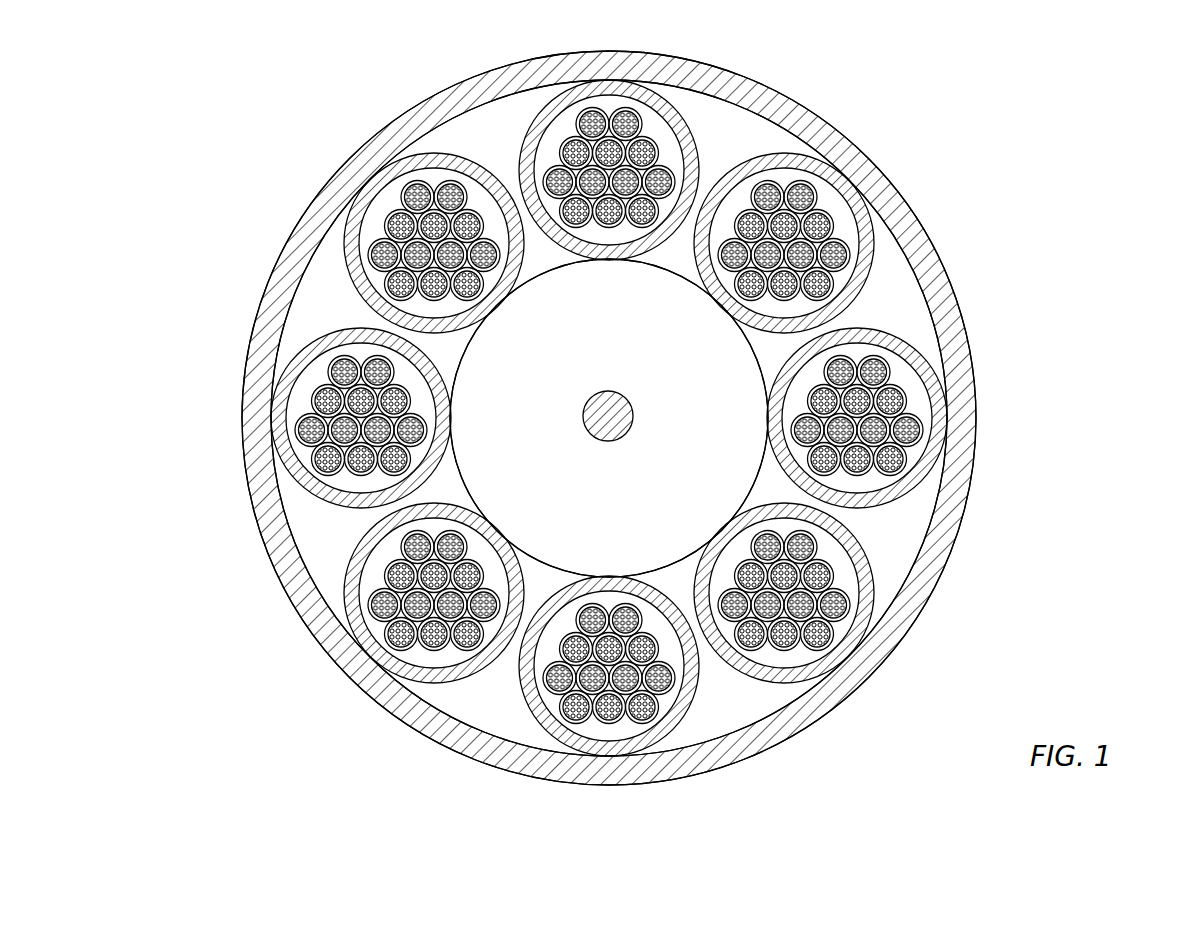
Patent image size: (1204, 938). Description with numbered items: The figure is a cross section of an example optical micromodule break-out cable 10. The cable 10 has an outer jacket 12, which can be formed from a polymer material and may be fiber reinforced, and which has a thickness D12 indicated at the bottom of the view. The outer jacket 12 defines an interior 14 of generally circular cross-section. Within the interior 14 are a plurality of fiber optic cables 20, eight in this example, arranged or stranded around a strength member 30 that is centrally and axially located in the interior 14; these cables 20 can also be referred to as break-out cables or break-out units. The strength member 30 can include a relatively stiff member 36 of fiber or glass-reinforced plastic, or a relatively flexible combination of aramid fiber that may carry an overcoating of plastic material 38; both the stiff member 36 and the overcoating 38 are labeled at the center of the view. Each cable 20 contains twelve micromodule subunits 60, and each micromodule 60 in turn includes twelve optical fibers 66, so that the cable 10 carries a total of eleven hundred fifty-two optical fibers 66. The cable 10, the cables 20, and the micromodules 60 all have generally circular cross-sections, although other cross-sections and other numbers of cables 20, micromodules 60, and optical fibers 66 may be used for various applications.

The optical micromodule cable 10 is at (1064, 103).
The outer jacket 12 is at (806, 103).
The interior 14 is at (740, 707).
The fiber optic cables 20 is at (883, 525).
The strength member 30 is at (667, 568).
The relatively stiff member 36 is at (598, 412).
The overcoating of plastic material 38 is at (470, 460).
The micromodule subunits 60 is at (307, 353).
The optical fibers 66 is at (404, 182).
The jacket thickness D12 is at (612, 787).